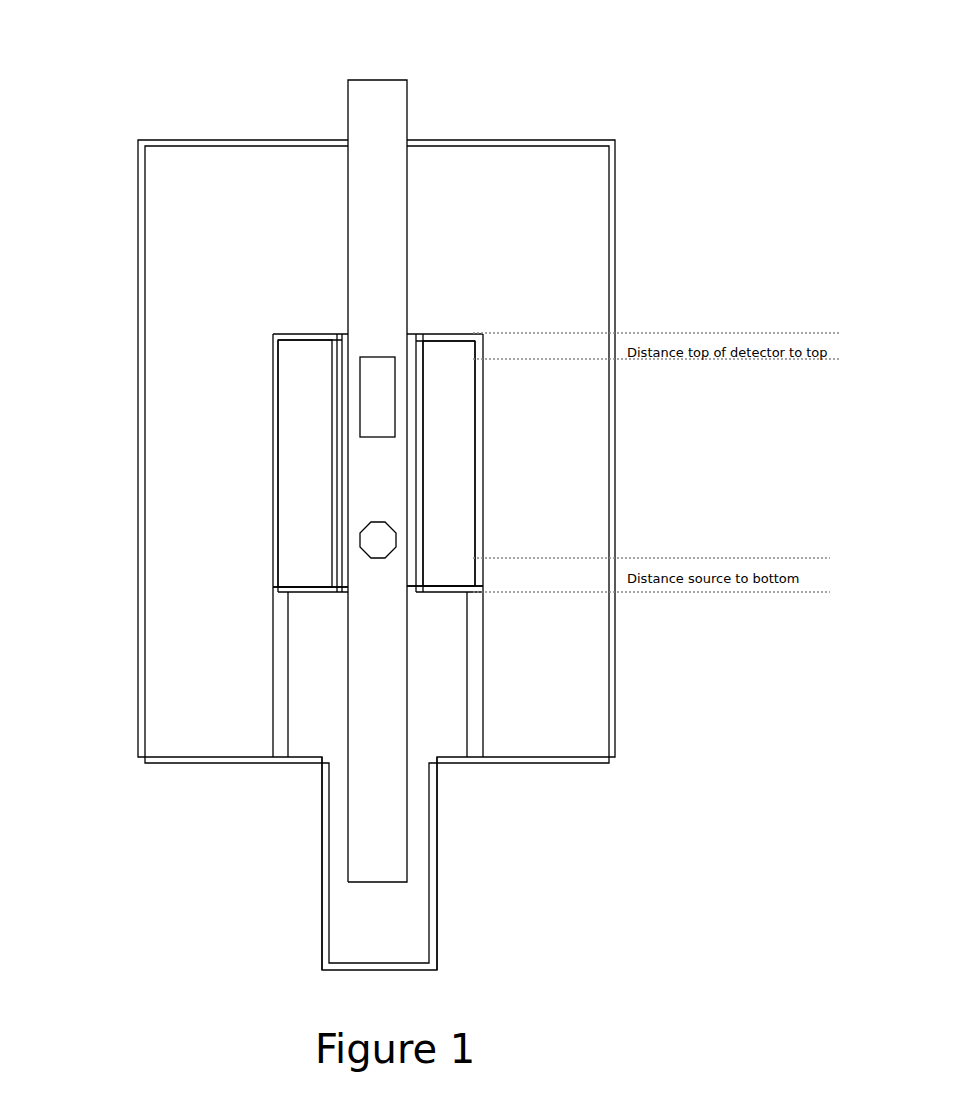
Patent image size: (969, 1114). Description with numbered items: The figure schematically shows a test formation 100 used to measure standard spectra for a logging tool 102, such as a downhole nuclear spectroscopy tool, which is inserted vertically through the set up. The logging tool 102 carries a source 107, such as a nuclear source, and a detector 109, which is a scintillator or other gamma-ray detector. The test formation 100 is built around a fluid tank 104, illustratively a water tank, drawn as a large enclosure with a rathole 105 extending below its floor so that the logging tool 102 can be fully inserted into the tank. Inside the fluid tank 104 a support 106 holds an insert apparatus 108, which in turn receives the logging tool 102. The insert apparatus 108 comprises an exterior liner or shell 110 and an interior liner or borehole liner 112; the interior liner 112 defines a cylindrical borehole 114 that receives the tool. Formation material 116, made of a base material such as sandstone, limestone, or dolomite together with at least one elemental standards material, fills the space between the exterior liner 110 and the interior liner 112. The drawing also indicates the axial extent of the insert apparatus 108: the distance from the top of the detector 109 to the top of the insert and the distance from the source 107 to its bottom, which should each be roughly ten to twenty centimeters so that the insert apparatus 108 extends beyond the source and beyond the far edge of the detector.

The test formation 100 is at (180, 96).
The logging tool 102 is at (342, 93).
The fluid tank 104 is at (134, 138).
The rathole 105 is at (362, 917).
The support 106 is at (467, 713).
The source 107 is at (360, 540).
The insert apparatus 108 is at (262, 358).
The detector 109 is at (360, 398).
The exterior liner 110 is at (333, 465).
The interior liner 112 is at (338, 463).
The cylindrical borehole 114 is at (342, 572).
The formation material 116 is at (295, 378).